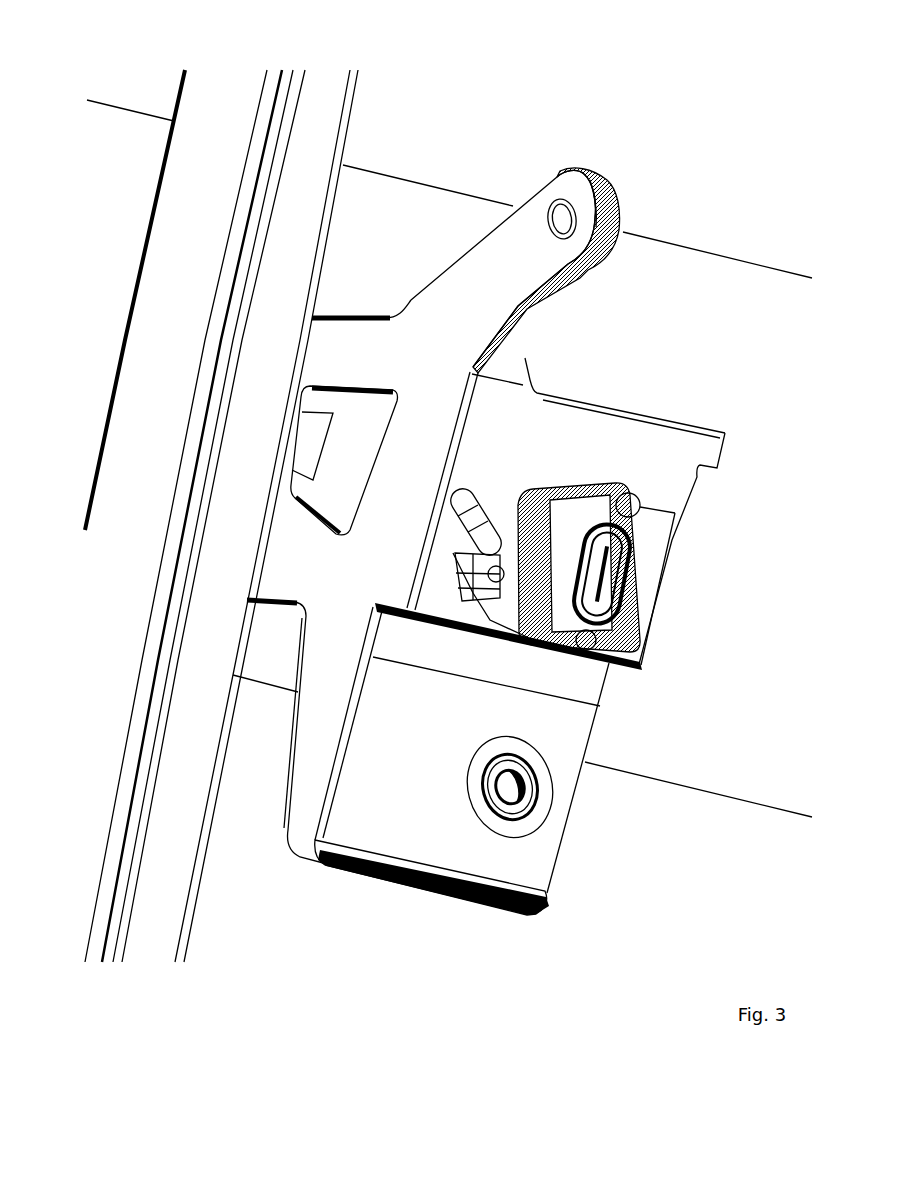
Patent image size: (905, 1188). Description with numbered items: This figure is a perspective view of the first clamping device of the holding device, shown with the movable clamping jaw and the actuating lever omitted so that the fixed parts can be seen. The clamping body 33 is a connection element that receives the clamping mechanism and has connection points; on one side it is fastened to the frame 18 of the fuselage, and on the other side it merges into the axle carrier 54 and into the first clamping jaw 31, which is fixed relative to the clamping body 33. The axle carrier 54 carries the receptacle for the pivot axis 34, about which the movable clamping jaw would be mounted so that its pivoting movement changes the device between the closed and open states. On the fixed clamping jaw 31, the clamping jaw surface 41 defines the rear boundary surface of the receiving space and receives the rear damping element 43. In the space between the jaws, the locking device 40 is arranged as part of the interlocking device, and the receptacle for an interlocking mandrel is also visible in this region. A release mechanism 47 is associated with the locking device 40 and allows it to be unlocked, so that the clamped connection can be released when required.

The frame 18 is at (208, 187).
The first clamping jaw 31 is at (309, 759).
The clamping body 33 is at (333, 356).
The pivot axis 34 is at (560, 217).
The axle carrier 54 is at (495, 293).
The locking device 40 is at (575, 555).
The release mechanism 47 is at (492, 561).
The clamping jaw surface 41 is at (473, 702).
The rear damping element 43 is at (518, 839).